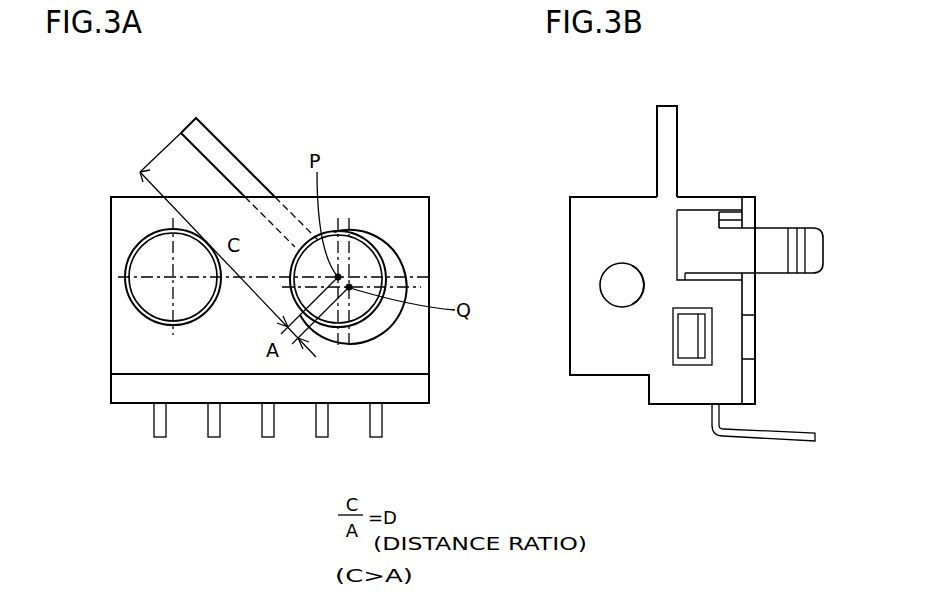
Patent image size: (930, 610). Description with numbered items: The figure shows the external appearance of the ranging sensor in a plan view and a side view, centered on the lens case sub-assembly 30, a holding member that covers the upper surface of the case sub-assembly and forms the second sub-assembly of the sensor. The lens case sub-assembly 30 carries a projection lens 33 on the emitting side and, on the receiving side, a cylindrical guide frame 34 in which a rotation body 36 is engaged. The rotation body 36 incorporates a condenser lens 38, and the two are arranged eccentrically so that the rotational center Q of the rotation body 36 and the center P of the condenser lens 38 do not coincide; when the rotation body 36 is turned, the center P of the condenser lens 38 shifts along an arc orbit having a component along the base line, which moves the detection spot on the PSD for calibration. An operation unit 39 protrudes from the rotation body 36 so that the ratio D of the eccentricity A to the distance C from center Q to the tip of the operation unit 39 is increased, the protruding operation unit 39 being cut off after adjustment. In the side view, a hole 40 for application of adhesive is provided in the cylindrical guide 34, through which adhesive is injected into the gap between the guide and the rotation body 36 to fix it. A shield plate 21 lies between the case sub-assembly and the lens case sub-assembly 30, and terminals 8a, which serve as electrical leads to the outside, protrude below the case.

In FIG. 3A, the lens case sub-assembly 30 is at (408, 163).
In FIG. 3B, the lens case sub-assembly 30 is at (600, 346).
In FIG. 3A, the projection lens 33 is at (158, 296).
In FIG. 3A, the cylindrical guide frame 34 is at (378, 335).
In FIG. 3A, the rotation body 36 is at (380, 320).
In FIG. 3A, the condenser lens 38 is at (362, 260).
In FIG. 3A, the operation unit 39 is at (201, 140).
In FIG. 3B, the operation unit 39 is at (678, 127).
In FIG. 3A, the terminals 8a is at (390, 443).
In FIG. 3B, the shield plate 21 is at (770, 248).
In FIG. 3B, the hole for application of adhesive 40 is at (622, 286).